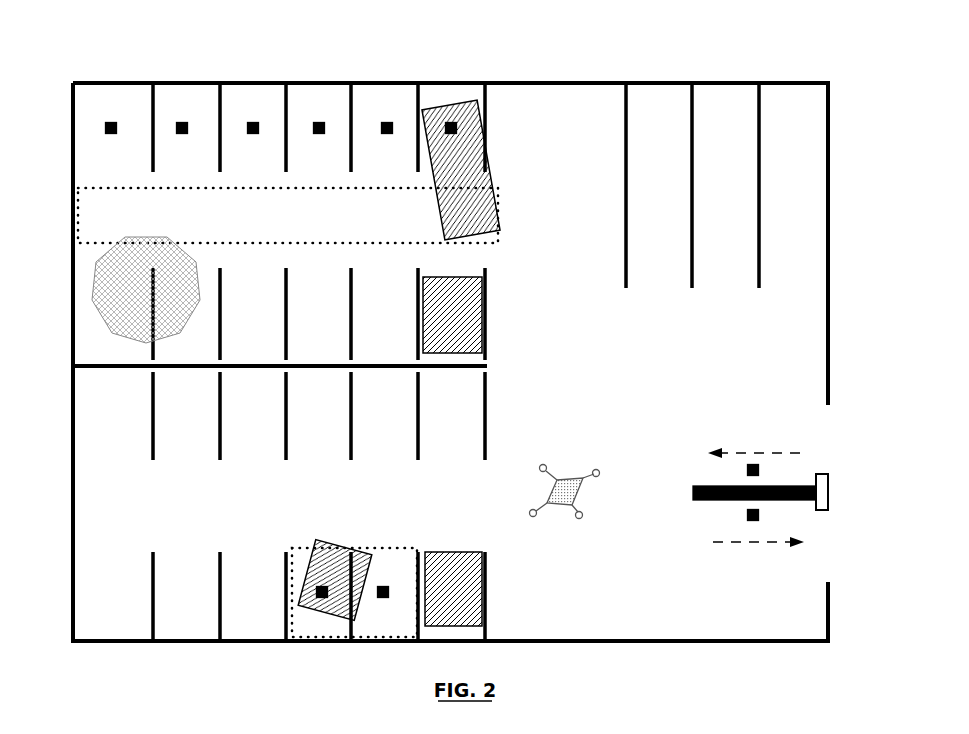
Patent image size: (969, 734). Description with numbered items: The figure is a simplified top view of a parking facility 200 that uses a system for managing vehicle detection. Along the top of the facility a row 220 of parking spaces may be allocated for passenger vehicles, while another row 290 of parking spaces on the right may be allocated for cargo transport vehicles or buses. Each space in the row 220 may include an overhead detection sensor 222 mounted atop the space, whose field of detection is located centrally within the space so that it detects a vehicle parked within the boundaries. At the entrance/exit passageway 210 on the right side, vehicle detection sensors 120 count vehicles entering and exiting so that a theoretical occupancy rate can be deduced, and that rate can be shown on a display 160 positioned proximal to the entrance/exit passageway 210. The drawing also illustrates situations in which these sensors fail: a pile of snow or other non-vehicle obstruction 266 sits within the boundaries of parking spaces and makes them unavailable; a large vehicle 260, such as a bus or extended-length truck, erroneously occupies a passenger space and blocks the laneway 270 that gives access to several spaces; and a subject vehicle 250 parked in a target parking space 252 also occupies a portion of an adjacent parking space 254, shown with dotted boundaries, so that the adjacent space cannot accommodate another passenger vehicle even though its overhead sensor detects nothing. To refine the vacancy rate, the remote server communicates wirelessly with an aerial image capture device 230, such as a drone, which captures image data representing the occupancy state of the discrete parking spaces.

The parking facility 200 is at (864, 42).
The row of parking spaces 220 is at (495, 73).
The row of parking spaces 290 is at (827, 71).
The overhead detection sensor 222 is at (250, 122).
The large vehicle 260 is at (485, 130).
The laneway 270 is at (106, 212).
The non-vehicle obstruction 266 is at (135, 290).
The aerial image capture device 230 is at (562, 478).
The entrance/exit passageway 210 is at (847, 405).
The vehicle detection sensors 120 is at (758, 466).
The display 160 is at (823, 477).
The subject vehicle 250 is at (317, 605).
The target parking space 252 is at (297, 562).
The adjacent parking space 254 is at (387, 557).